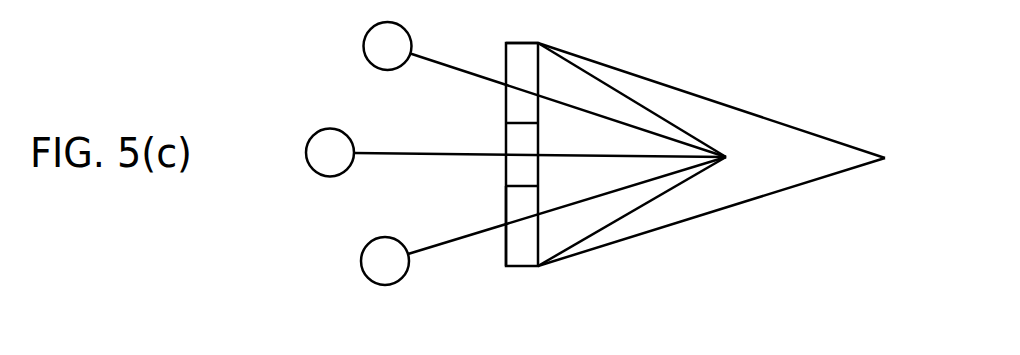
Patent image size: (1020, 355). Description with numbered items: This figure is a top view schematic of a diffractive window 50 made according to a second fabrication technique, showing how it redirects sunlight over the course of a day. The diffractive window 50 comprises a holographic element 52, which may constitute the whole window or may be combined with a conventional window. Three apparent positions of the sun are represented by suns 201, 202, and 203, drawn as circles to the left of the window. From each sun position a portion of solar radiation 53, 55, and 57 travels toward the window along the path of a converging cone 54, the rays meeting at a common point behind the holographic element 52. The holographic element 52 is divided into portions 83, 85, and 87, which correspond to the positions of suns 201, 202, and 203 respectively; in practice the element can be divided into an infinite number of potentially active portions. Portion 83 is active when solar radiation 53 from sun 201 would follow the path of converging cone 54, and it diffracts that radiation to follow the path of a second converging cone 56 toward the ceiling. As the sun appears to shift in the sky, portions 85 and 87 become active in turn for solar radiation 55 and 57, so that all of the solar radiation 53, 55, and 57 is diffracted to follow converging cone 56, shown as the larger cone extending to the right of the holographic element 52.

The sun 201 is at (363, 45).
The sun 202 is at (306, 152).
The sun 203 is at (362, 261).
The solar radiation 53 is at (470, 73).
The solar radiation 55 is at (410, 155).
The solar radiation 57 is at (422, 250).
The diffractive window 50 is at (518, 266).
The holographic element 52 is at (522, 43).
The portion of holographic element 83 is at (505, 57).
The portion of holographic element 85 is at (505, 162).
The portion of holographic element 87 is at (505, 205).
The converging cone 54 is at (635, 115).
The converging cone 56 is at (833, 157).